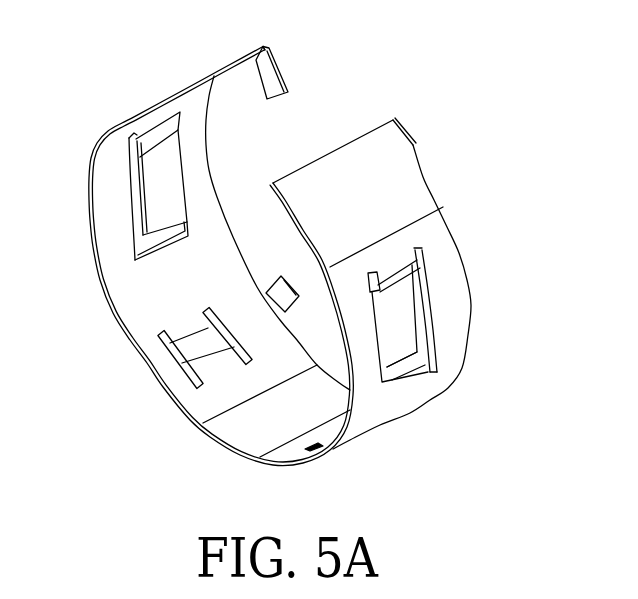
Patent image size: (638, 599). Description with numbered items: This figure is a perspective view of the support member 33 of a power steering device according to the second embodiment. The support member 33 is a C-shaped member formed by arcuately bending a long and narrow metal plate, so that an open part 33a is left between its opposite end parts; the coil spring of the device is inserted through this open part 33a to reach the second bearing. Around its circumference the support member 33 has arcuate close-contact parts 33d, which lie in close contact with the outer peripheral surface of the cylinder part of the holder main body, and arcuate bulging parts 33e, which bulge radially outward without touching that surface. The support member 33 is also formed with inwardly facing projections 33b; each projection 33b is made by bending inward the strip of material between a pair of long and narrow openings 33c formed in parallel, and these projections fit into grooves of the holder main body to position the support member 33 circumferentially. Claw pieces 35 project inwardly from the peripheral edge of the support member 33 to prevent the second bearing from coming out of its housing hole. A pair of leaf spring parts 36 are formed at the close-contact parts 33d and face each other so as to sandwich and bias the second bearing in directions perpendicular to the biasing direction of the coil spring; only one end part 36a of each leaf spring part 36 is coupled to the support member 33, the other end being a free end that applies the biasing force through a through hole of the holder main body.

The support member 33 is at (457, 148).
The open part 33a is at (312, 125).
The projection 33b is at (205, 350).
The opening 33c is at (205, 310).
The close-contact part 33d is at (133, 300).
The bulging part 33e is at (113, 128).
The claw piece 35 is at (270, 77).
The leaf spring part 36 is at (160, 193).
The end part 36a is at (157, 127).